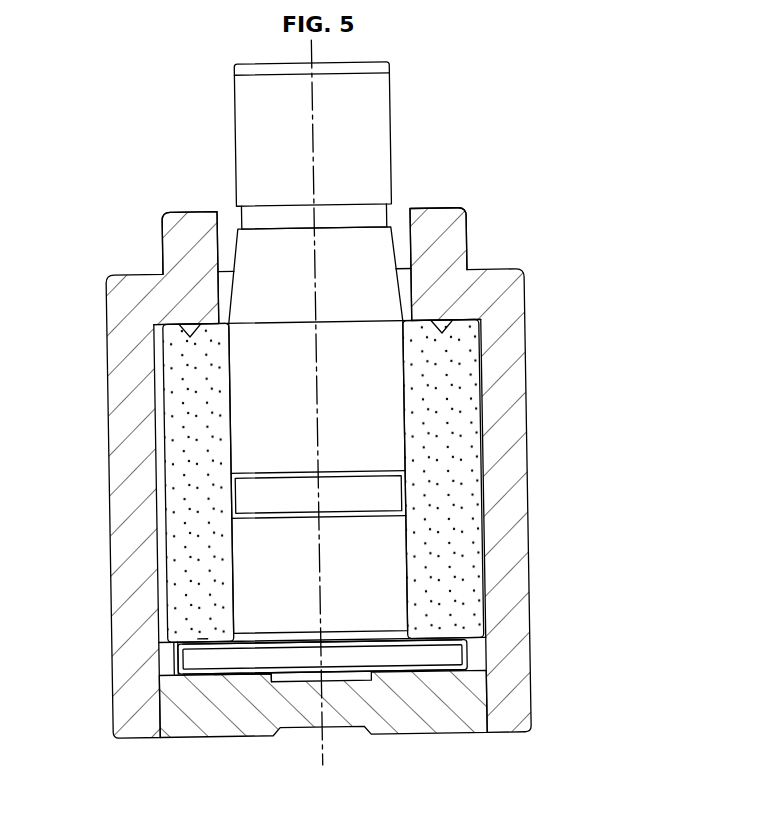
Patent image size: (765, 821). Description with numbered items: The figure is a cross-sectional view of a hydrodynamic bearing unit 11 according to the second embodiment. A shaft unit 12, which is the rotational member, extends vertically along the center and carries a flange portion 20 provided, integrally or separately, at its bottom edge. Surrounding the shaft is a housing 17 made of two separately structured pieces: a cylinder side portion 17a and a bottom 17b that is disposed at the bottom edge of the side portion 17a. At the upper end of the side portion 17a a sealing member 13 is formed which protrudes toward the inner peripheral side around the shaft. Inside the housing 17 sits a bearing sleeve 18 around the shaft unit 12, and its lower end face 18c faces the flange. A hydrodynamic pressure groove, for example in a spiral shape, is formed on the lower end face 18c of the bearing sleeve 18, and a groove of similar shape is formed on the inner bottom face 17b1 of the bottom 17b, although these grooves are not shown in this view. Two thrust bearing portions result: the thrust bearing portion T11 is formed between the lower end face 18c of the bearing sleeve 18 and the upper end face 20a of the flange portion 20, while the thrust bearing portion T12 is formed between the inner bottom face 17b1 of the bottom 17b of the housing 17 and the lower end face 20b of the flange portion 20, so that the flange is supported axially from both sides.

The hydrodynamic bearing unit 11 is at (374, 417).
The shaft unit 12 is at (396, 146).
The sealing member 13 is at (197, 277).
The housing 17 is at (294, 492).
The cylinder side portion 17a is at (127, 484).
The bottom 17b is at (323, 726).
The inner bottom face 17b1 is at (236, 673).
The bearing sleeve 18 is at (335, 496).
The lower end face of bearing sleeve 18c is at (208, 655).
The flange portion 20 is at (395, 691).
The upper end face of flange portion 20a is at (433, 630).
The lower end face of flange portion 20b is at (437, 676).
The thrust bearing portion T11 is at (194, 637).
The thrust bearing portion T12 is at (218, 675).